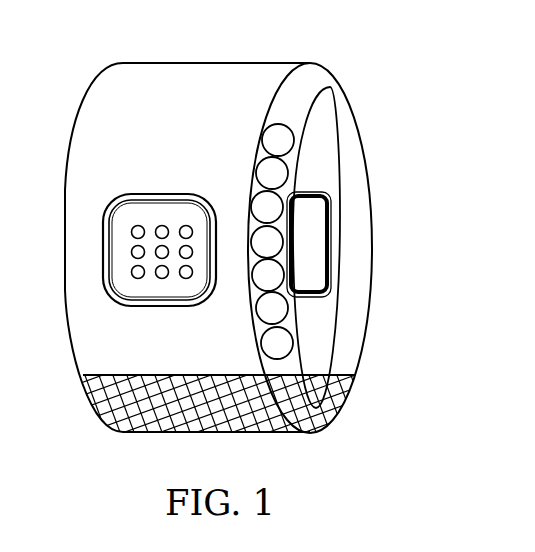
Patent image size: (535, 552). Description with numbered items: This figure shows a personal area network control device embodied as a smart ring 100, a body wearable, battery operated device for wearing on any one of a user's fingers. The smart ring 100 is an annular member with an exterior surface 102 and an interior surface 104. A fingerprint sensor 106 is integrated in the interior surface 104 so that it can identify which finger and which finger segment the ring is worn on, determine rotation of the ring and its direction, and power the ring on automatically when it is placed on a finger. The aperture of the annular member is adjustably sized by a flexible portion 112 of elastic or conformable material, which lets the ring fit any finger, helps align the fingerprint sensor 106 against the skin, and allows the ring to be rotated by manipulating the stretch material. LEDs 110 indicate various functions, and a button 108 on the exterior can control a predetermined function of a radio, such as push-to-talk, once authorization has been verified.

The smart ring 100 is at (428, 68).
The exterior surface 102 is at (112, 123).
The interior surface 104 is at (317, 158).
The fingerprint sensor 106 is at (307, 243).
The button 108 is at (131, 252).
The LEDs 110 is at (280, 343).
The flexible portion 112 is at (97, 400).